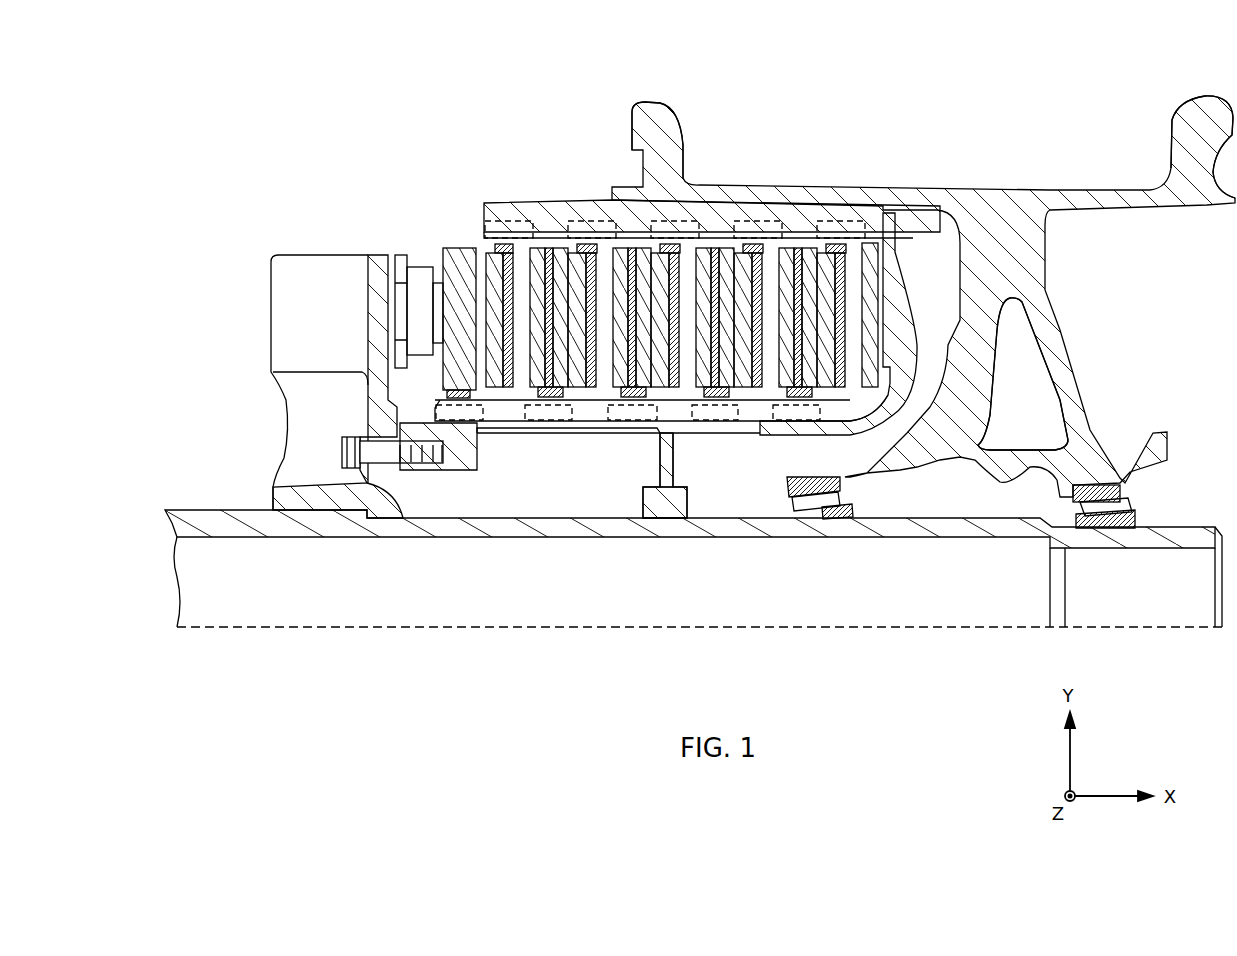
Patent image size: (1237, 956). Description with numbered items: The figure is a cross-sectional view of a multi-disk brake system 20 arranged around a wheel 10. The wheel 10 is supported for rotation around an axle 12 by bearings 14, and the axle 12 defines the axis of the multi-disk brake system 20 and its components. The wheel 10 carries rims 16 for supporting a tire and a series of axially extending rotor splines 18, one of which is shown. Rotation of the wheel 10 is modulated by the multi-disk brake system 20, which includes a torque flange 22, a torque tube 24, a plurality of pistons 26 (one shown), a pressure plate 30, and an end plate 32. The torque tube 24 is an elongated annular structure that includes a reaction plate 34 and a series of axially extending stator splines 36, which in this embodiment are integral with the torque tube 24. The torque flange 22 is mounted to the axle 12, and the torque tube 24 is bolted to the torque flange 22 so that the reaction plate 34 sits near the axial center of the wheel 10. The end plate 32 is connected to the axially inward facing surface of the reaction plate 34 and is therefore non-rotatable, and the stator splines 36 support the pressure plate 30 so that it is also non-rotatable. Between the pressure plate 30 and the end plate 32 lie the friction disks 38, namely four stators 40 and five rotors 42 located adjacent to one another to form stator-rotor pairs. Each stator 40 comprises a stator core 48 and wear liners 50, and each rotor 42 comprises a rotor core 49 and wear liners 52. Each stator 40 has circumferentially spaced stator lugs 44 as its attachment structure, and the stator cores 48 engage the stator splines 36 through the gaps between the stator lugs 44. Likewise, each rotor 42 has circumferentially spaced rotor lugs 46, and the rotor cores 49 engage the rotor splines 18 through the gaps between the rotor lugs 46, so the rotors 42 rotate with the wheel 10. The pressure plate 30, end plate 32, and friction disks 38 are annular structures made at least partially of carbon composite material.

The wheel 10 is at (1057, 158).
The axle 12 is at (968, 535).
The bearings 14 is at (830, 497).
The rims 16 is at (662, 102).
The rotor splines 18 is at (712, 179).
The multi-disk brake system 20 is at (366, 148).
The torque flange 22 is at (378, 420).
The torque tube 24 is at (543, 428).
The pistons 26 is at (420, 268).
The pressure plate 30 is at (447, 250).
The end plate 32 is at (876, 244).
The reaction plate 34 is at (940, 364).
The stator splines 36 is at (603, 418).
The friction disks 38 is at (476, 240).
The stator 40 is at (560, 408).
The rotor 42 is at (497, 238).
The stator lugs 44 is at (768, 412).
The rotor lugs 46 is at (743, 236).
The stator core 48 is at (829, 346).
The rotor core 49 is at (835, 322).
The wear liners 50 is at (718, 316).
The wear liners 52 is at (812, 247).